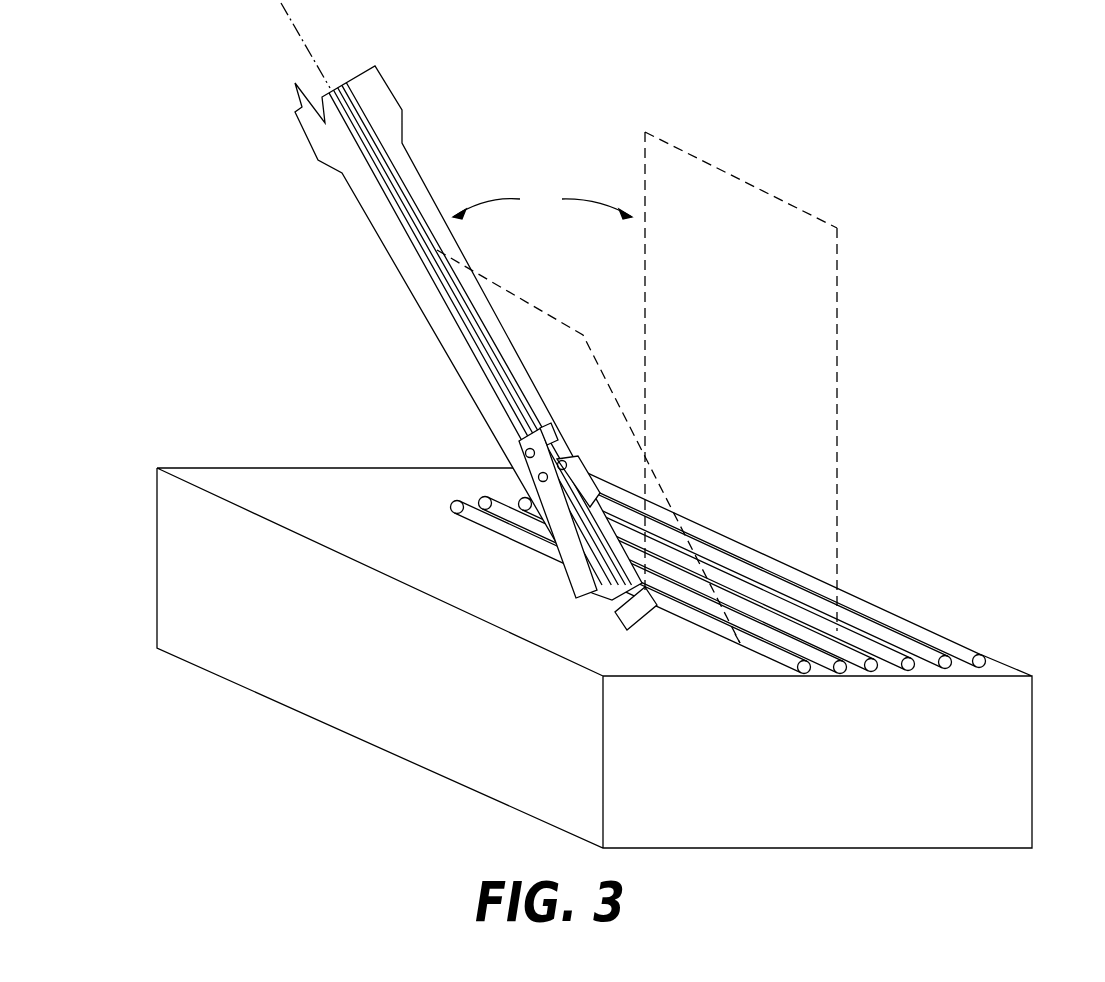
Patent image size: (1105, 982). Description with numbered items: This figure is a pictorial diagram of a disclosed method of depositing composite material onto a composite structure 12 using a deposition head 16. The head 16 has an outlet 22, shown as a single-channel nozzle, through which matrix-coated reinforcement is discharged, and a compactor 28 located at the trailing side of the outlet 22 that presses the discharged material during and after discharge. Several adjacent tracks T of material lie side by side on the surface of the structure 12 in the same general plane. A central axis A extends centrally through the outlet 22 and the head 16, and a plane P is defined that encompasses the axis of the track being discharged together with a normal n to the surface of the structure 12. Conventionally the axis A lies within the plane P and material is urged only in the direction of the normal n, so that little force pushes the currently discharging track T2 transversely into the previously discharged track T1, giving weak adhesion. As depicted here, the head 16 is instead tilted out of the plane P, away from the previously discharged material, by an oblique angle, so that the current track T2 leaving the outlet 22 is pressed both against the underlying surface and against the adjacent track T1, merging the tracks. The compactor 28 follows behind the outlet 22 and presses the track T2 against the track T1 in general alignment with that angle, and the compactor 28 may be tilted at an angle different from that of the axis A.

The composite structure 12 is at (1030, 712).
The deposition head 16 is at (121, 238).
The outlet 22 is at (412, 262).
The compactor 28 is at (613, 618).
The tracks T is at (807, 670).
The previously discharged track T1 is at (808, 657).
The currently discharging track T2 is at (748, 645).
The central axis A is at (308, 53).
The plane P is at (839, 400).
The normal n is at (645, 292).